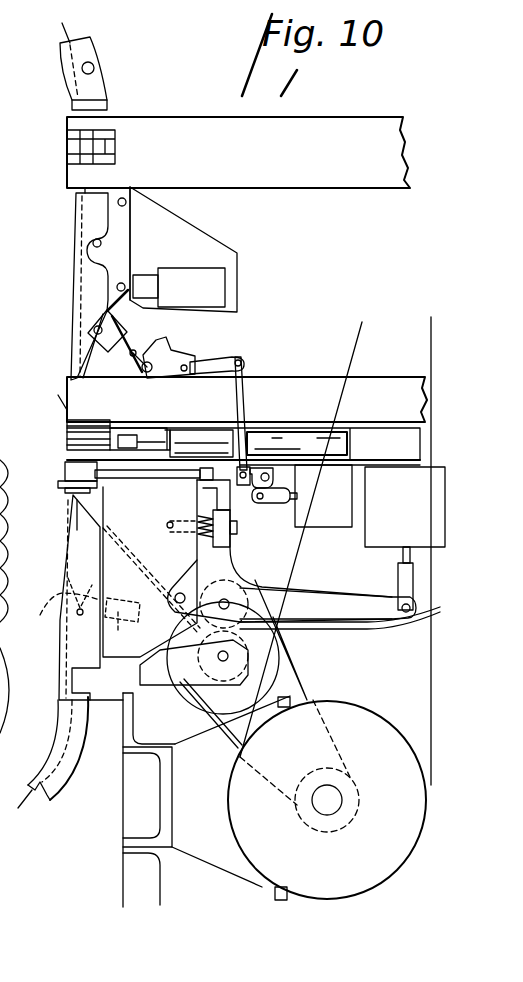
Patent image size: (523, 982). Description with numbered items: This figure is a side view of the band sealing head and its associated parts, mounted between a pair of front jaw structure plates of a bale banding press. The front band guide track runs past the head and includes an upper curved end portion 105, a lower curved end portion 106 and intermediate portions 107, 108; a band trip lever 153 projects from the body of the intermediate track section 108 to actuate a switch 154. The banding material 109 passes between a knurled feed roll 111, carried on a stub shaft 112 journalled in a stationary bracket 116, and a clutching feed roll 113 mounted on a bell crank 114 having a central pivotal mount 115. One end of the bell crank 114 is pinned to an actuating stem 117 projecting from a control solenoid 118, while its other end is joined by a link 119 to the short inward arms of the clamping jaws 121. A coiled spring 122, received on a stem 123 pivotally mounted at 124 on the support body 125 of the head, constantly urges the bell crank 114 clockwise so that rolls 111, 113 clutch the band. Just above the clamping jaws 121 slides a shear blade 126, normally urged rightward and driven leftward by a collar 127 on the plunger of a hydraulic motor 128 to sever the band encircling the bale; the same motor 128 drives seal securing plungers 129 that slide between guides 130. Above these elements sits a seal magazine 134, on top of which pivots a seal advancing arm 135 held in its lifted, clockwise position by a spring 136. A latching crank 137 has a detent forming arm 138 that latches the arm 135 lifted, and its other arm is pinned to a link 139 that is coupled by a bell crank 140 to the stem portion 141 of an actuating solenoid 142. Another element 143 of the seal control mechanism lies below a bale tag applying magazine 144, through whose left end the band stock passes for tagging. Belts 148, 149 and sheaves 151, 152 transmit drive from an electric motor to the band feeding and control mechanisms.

The upper curved end portion 105 is at (67, 68).
The lower curved end portion 106 is at (42, 748).
The intermediate portion 107 is at (88, 268).
The intermediate portion 108 is at (75, 638).
The banding material 109 is at (377, 630).
The knurled feed roll 111 is at (282, 647).
The stub shaft 112 is at (224, 662).
The clutching feed roll 113 is at (280, 612).
The bell crank 114 is at (263, 593).
The central pivotal mount 115 is at (176, 596).
The stationary bracket 116 is at (155, 677).
The actuating stem 117 is at (398, 568).
The control solenoid 118 is at (410, 512).
The link 119 is at (172, 482).
The clamping jaws 121 is at (65, 472).
The coiled spring 122 is at (232, 547).
The stem 123 is at (237, 528).
The pivotal mounting 124 is at (168, 528).
The support body 125 is at (143, 537).
The shear blade 126 is at (107, 462).
The collar 127 is at (167, 432).
The hydraulic motor 128 is at (310, 443).
The seal securing plungers 129 is at (90, 447).
The guides 130 is at (67, 448).
The seal magazine 134 is at (190, 404).
The seal advancing arm 135 is at (103, 312).
The spring 136 is at (130, 353).
The latching crank 137 is at (215, 360).
The detent forming arm 138 is at (168, 341).
The link 139 is at (245, 392).
The bell crank 140 is at (260, 470).
The stem portion 141 is at (297, 496).
The actuating solenoid 142 is at (330, 518).
The seal control mechanism element 143 is at (215, 283).
The bale tag applying magazine 144 is at (353, 176).
The belt 148 is at (428, 684).
The belt 149 is at (298, 672).
The sheave 151 is at (343, 877).
The sheave 152 is at (262, 680).
The band trip lever 153 is at (61, 607).
The switch 154 is at (123, 627).